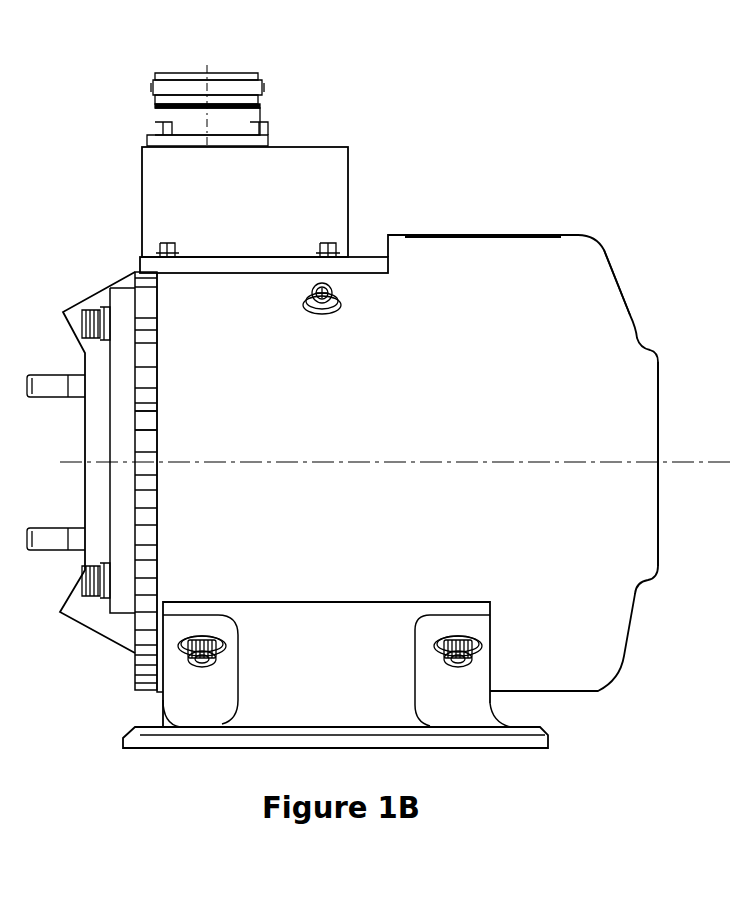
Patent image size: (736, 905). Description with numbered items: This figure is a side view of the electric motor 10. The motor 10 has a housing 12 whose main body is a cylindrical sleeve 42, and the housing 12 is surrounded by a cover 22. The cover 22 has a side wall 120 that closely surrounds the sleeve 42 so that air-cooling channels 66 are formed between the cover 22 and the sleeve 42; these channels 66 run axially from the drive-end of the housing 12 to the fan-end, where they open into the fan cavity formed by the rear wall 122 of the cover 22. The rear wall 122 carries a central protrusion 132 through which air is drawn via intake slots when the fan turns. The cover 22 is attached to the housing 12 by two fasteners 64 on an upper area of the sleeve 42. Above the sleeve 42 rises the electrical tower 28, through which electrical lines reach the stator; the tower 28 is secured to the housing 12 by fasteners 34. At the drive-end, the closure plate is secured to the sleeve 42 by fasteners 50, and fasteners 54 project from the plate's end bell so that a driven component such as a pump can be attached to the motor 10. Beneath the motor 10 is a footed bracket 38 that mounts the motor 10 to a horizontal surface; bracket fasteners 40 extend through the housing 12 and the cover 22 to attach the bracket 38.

The electric motor 10 is at (385, 139).
The housing 12 is at (147, 624).
The cover 22 is at (568, 272).
The electrical tower 28 is at (348, 188).
The fasteners 34 is at (160, 252).
The footed bracket 38 is at (492, 712).
The fasteners 40 is at (202, 663).
The cylindrical sleeve 42 is at (140, 650).
The fasteners 50 is at (90, 318).
The fasteners 54 is at (54, 375).
The fasteners 64 is at (325, 302).
The air-cooling channels 66 is at (147, 415).
The side wall 120 is at (480, 234).
The rear wall 122 is at (625, 303).
The central protrusion 132 is at (658, 390).